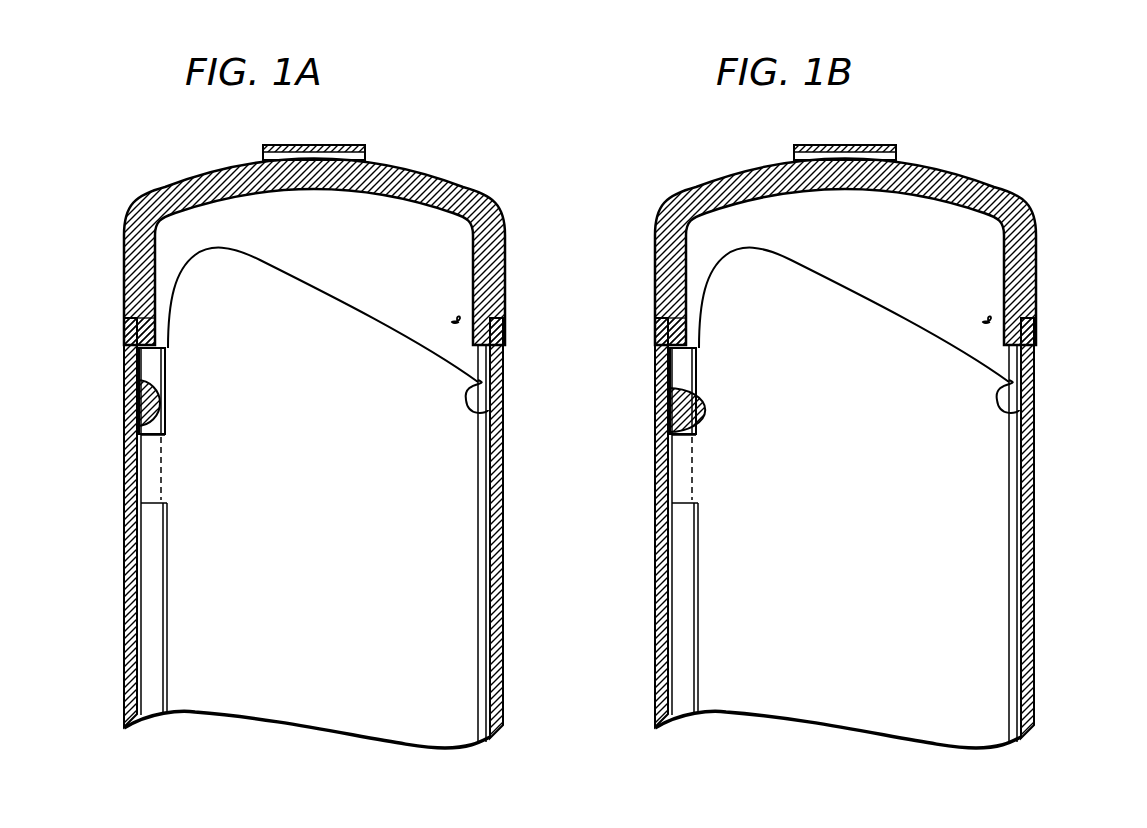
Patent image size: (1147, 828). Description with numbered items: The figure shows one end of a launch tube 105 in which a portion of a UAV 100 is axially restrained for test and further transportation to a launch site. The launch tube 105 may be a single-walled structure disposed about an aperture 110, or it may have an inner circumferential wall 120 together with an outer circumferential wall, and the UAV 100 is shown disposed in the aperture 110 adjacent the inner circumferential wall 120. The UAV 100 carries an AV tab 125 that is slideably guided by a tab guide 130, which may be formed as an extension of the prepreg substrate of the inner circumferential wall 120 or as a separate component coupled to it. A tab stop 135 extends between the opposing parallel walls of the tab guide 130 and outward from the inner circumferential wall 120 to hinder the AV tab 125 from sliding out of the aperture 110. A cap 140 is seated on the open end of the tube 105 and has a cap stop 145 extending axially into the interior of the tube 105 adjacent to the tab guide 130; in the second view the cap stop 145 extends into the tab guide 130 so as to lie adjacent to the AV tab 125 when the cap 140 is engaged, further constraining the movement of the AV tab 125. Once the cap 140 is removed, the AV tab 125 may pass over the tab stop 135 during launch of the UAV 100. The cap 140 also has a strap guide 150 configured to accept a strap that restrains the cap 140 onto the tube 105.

In FIG. 1A, the UAV 100 is at (458, 478).
In FIG. 1B, the UAV 100 is at (881, 546).
In FIG. 1A, the launch tube 105 is at (505, 452).
In FIG. 1B, the launch tube 105 is at (889, 528).
In FIG. 1A, the aperture 110 is at (462, 321).
In FIG. 1B, the aperture 110 is at (908, 315).
In FIG. 1A, the inner circumferential wall 120 is at (480, 384).
In FIG. 1B, the inner circumferential wall 120 is at (1058, 387).
In FIG. 1A, the AV tab 125 is at (150, 467).
In FIG. 1B, the AV tab 125 is at (642, 467).
In FIG. 1A, the tab guide 130 is at (145, 364).
In FIG. 1B, the tab guide 130 is at (642, 388).
In FIG. 1A, the tab stop 135 is at (148, 407).
In FIG. 1B, the tab stop 135 is at (646, 408).
In FIG. 1A, the cap 140 is at (456, 178).
In FIG. 1B, the cap 140 is at (862, 229).
In FIG. 1A, the cap stop 145 is at (142, 323).
In FIG. 1B, the cap stop 145 is at (637, 321).
In FIG. 1A, the strap guide 150 is at (338, 145).
In FIG. 1B, the strap guide 150 is at (862, 126).